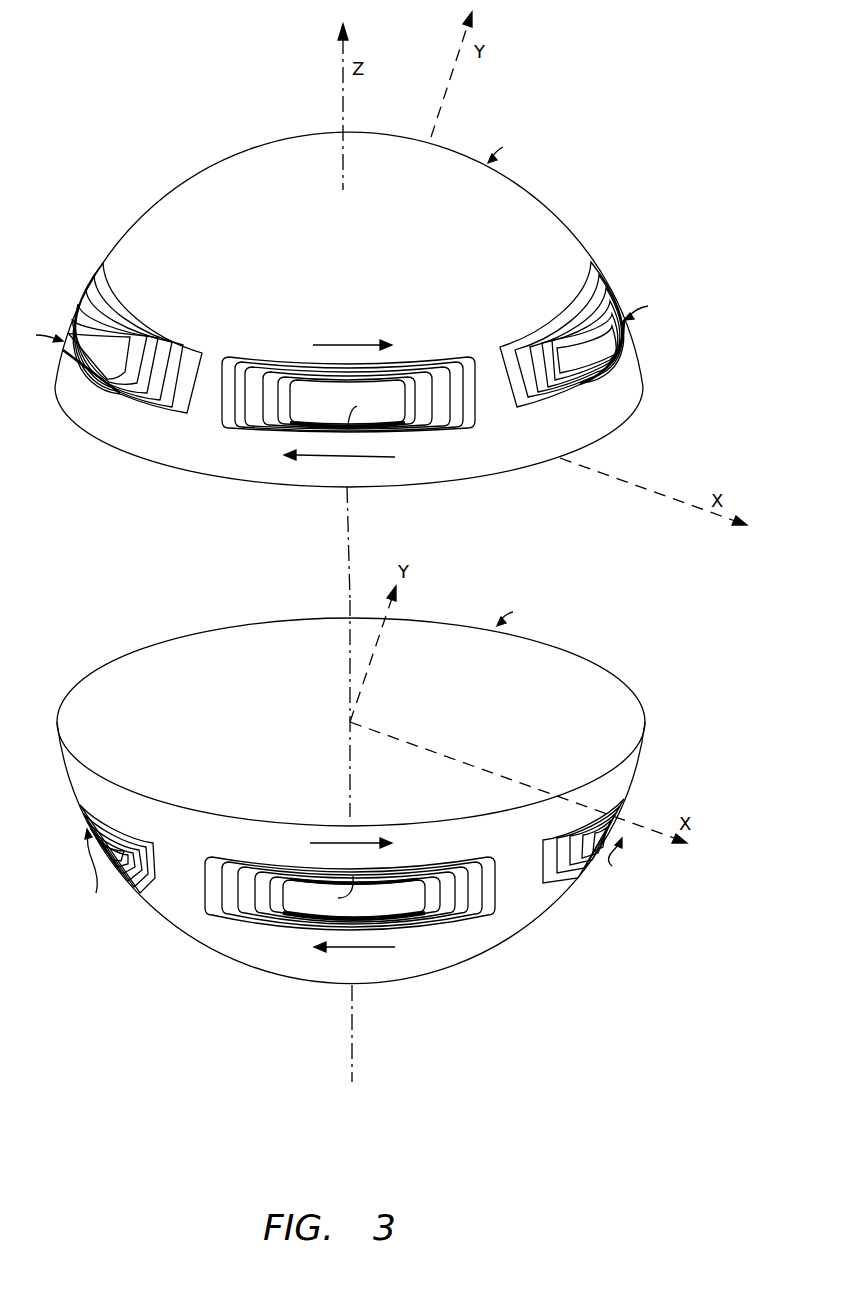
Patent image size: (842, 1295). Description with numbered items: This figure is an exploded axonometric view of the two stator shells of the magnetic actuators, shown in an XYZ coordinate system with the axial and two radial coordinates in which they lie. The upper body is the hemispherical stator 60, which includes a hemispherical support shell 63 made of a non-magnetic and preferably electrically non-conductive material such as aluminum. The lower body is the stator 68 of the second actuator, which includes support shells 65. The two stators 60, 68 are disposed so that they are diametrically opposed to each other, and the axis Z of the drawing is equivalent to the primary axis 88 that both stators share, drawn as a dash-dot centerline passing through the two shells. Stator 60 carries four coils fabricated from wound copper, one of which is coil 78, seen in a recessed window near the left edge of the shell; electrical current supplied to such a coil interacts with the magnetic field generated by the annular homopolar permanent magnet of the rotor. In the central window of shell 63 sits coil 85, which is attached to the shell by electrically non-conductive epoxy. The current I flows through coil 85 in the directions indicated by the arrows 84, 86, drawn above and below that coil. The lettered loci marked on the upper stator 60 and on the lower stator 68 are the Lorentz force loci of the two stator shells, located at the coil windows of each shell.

The hemispherical stator 60 is at (345, 303).
The hemispherical support shell 63 is at (528, 218).
The support shells 65 is at (351, 809).
The stator 68 is at (468, 950).
The coil 78 is at (152, 353).
The arrow 84 is at (340, 345).
The coil 85 is at (252, 415).
The arrow 86 is at (340, 456).
The primary axis 88 is at (349, 518).